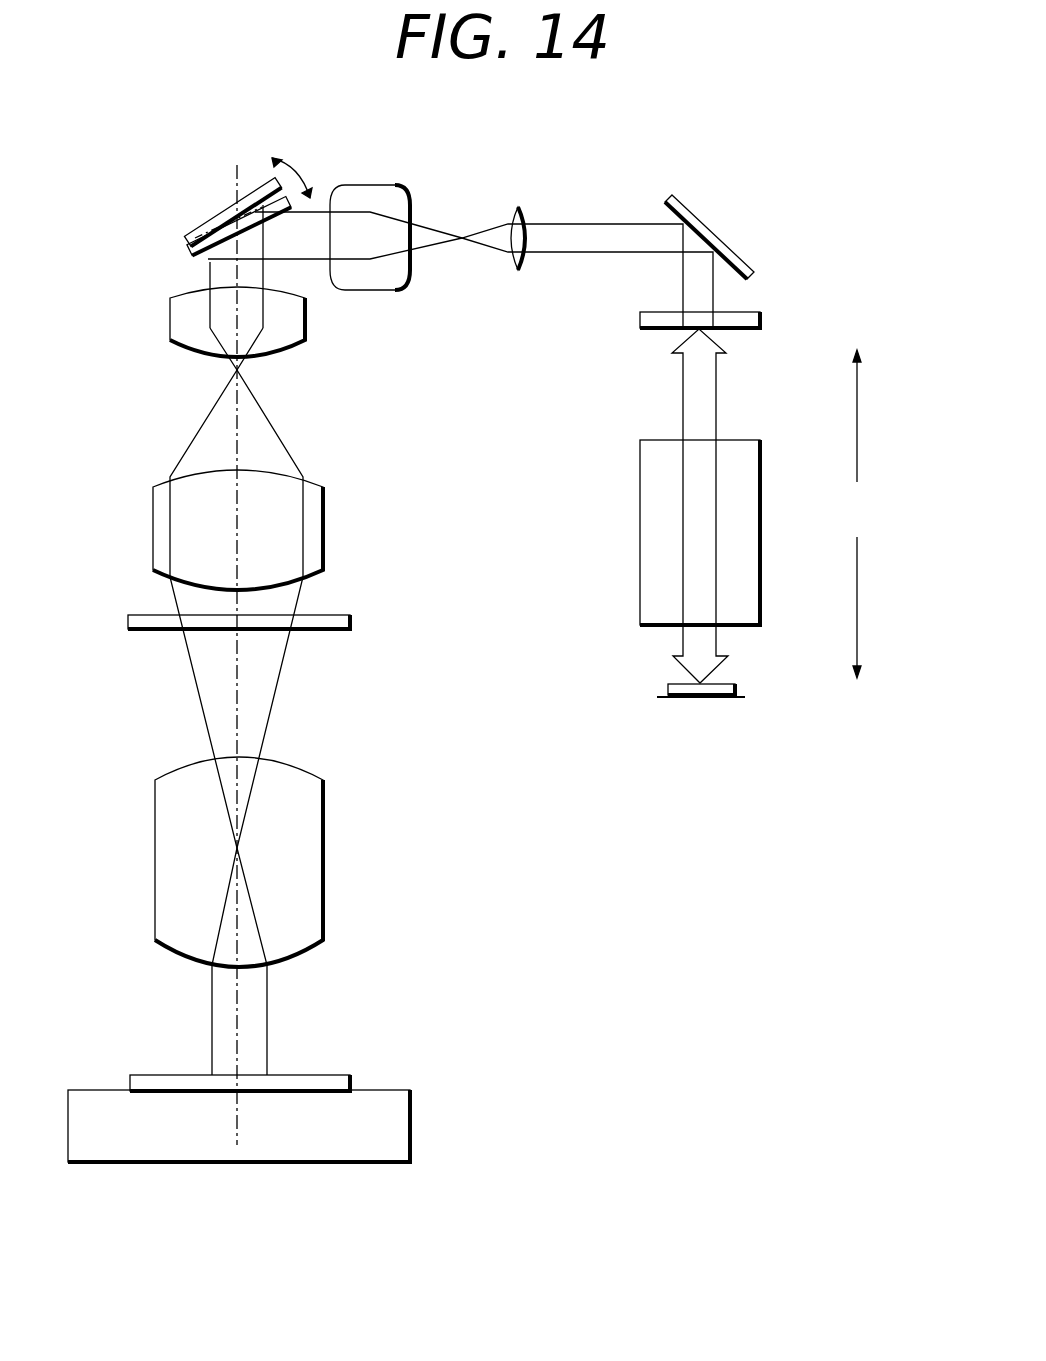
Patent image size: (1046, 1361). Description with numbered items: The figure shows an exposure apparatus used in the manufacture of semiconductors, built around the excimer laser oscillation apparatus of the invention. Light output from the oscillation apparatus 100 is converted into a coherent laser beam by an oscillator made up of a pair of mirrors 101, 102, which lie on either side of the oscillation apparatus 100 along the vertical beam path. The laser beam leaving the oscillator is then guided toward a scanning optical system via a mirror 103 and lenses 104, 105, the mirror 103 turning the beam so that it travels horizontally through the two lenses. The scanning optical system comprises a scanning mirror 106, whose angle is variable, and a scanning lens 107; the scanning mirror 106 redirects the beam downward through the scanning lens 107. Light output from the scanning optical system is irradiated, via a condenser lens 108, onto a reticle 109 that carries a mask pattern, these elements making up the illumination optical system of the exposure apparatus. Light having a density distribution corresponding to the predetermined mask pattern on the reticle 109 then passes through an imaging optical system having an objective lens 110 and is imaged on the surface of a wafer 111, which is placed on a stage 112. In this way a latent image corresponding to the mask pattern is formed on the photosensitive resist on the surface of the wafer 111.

The oscillation apparatus 100 is at (760, 457).
The mirror 101 is at (737, 685).
The mirror 102 is at (762, 315).
The mirror 103 is at (703, 218).
The lens 104 is at (522, 210).
The lens 105 is at (383, 185).
The scanning mirror 106 is at (222, 212).
The scanning lens 107 is at (307, 322).
The condenser lens 108 is at (323, 503).
The reticle 109 is at (350, 618).
The objective lens 110 is at (323, 793).
The wafer 111 is at (350, 1083).
The stage 112 is at (412, 1110).